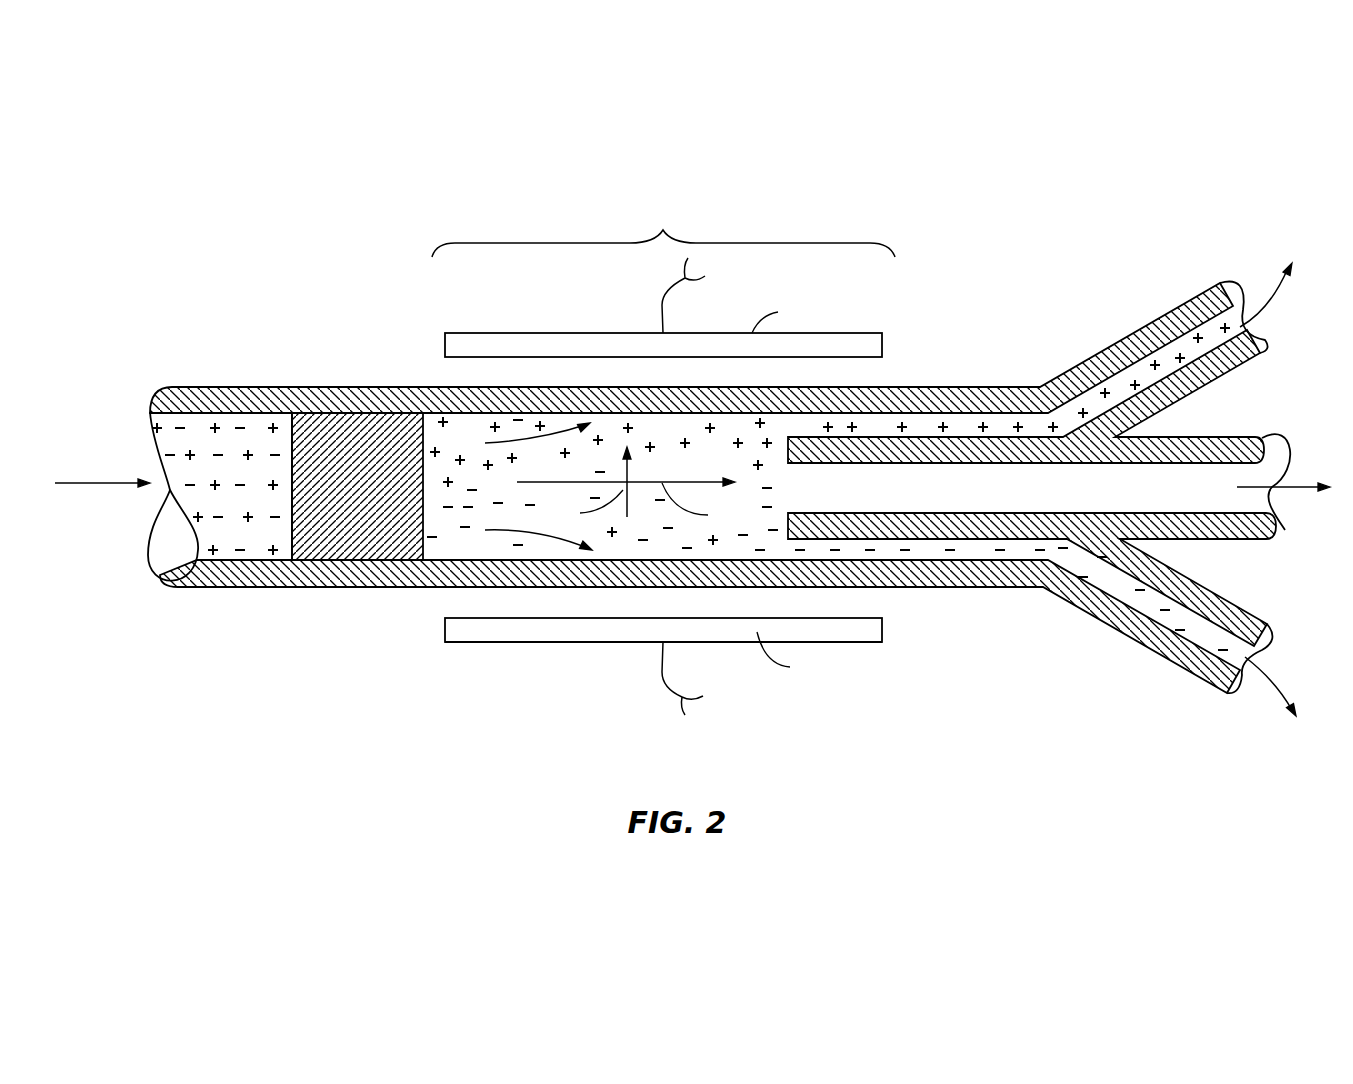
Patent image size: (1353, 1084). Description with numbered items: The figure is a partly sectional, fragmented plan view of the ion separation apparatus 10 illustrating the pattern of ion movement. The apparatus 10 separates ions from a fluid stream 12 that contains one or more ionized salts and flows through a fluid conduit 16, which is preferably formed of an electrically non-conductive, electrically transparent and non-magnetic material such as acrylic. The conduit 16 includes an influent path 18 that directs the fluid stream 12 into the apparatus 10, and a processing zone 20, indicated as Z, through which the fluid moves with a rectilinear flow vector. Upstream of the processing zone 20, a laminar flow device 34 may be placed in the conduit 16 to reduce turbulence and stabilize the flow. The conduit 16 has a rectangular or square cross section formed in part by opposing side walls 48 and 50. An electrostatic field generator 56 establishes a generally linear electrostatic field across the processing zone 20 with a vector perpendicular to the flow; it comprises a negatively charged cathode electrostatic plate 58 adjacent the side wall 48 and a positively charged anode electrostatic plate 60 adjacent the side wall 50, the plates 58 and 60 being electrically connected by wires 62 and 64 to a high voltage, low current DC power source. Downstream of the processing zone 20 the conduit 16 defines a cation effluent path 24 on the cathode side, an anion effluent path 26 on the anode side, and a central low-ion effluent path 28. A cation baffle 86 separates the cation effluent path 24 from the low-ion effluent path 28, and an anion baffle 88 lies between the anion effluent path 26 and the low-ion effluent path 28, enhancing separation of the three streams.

The ion separation apparatus 10 is at (700, 462).
The fluid stream 12 is at (228, 430).
The fluid conduit 16 is at (363, 385).
The influent path 18 is at (228, 540).
The processing zone 20 is at (467, 548).
The cation effluent path 24 is at (1063, 427).
The anion effluent path 26 is at (1065, 560).
The low-ion effluent path 28 is at (1205, 482).
The laminar flow device 34 is at (383, 547).
The side wall 48 is at (457, 395).
The side wall 50 is at (288, 563).
The electrostatic field generator 56 is at (876, 650).
The cathode electrostatic plate 58 is at (845, 333).
The anode electrostatic plate 60 is at (483, 642).
The wire 62 is at (660, 307).
The wire 64 is at (660, 672).
The cation baffle 86 is at (865, 445).
The anion baffle 88 is at (1285, 530).